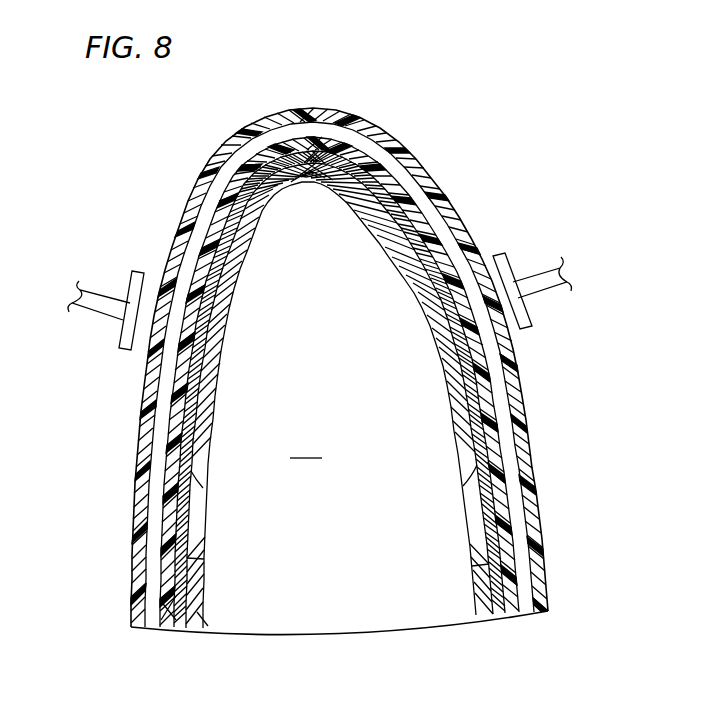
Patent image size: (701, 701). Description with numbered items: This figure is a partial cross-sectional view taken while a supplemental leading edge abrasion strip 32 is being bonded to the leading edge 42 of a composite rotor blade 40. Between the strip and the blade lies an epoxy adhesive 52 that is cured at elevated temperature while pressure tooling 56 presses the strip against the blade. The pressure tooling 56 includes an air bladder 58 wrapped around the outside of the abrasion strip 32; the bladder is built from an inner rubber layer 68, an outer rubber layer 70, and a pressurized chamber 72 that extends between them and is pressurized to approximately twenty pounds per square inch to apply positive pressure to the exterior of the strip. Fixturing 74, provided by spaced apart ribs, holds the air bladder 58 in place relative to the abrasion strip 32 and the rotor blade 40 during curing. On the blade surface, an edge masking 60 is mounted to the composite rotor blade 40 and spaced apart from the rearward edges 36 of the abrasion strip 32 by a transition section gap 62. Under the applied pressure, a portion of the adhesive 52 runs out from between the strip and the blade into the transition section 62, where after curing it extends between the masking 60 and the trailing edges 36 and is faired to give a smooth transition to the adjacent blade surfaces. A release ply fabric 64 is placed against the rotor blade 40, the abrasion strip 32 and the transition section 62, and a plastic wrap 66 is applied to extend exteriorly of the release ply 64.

The supplemental leading edge abrasion strip 32 is at (427, 303).
The rearward edges 36 is at (203, 490).
The composite rotor blade 40 is at (306, 445).
The leading edge 42 is at (302, 184).
The adhesive 52 is at (457, 440).
The pressure tooling 56 is at (129, 606).
The air bladder 58 is at (129, 562).
The edge masking 60 is at (197, 567).
The transition section gap 62 is at (470, 542).
The release ply fabric 64 is at (203, 613).
The plastic wrap 66 is at (161, 616).
The inner rubber layer 68 is at (337, 150).
The outer rubber layer 70 is at (377, 134).
The pressurized chamber 72 is at (218, 187).
The fixturing 74 is at (97, 307).